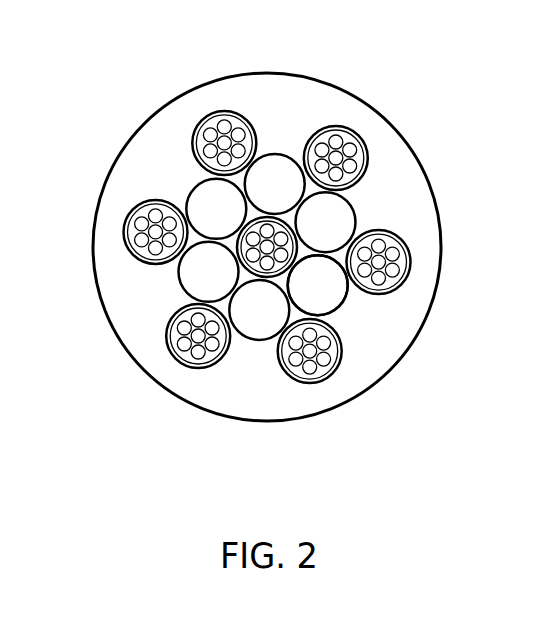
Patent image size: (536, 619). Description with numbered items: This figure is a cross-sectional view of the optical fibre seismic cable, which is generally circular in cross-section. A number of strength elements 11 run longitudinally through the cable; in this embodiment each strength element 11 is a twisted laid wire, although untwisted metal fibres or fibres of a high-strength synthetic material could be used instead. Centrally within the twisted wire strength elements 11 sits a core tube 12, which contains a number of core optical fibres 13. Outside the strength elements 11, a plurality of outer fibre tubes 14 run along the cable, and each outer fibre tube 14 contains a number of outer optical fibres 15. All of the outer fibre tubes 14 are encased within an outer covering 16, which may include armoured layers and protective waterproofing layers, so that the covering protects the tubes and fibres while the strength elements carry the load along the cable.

The strength element 11 is at (342, 223).
The core tube 12 is at (315, 260).
The core optical fibre 13 is at (267, 247).
The outer fibre tube 14 is at (335, 127).
The outer optical fibre 15 is at (357, 133).
The outer covering 16 is at (256, 98).